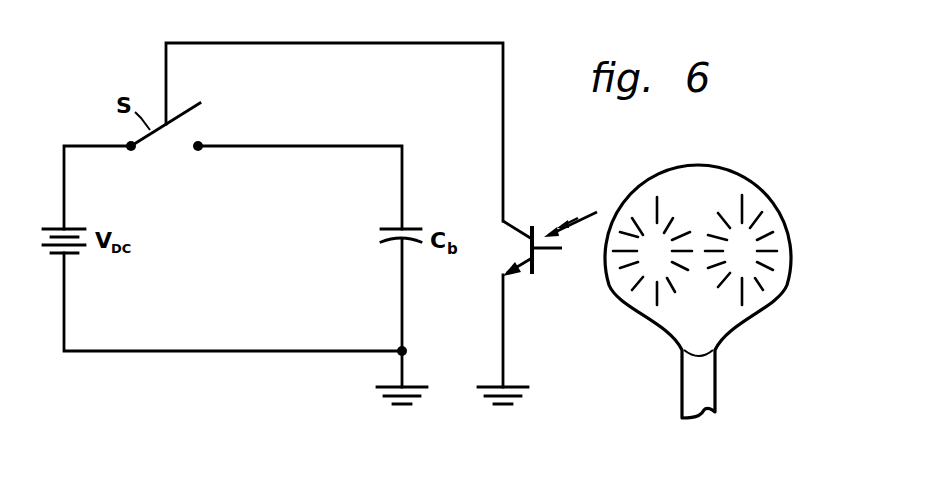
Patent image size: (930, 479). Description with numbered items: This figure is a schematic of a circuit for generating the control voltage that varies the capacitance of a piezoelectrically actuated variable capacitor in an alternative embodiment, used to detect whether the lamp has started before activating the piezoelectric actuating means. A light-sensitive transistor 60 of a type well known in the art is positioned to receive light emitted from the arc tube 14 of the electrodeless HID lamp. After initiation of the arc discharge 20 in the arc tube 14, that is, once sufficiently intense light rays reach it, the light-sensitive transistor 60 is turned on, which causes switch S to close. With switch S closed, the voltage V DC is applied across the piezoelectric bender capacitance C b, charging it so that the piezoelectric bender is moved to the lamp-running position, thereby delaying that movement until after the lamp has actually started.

The arc tube 14 is at (668, 168).
The arc discharge 20 is at (661, 231).
The light-sensitive transistor 60 is at (518, 223).